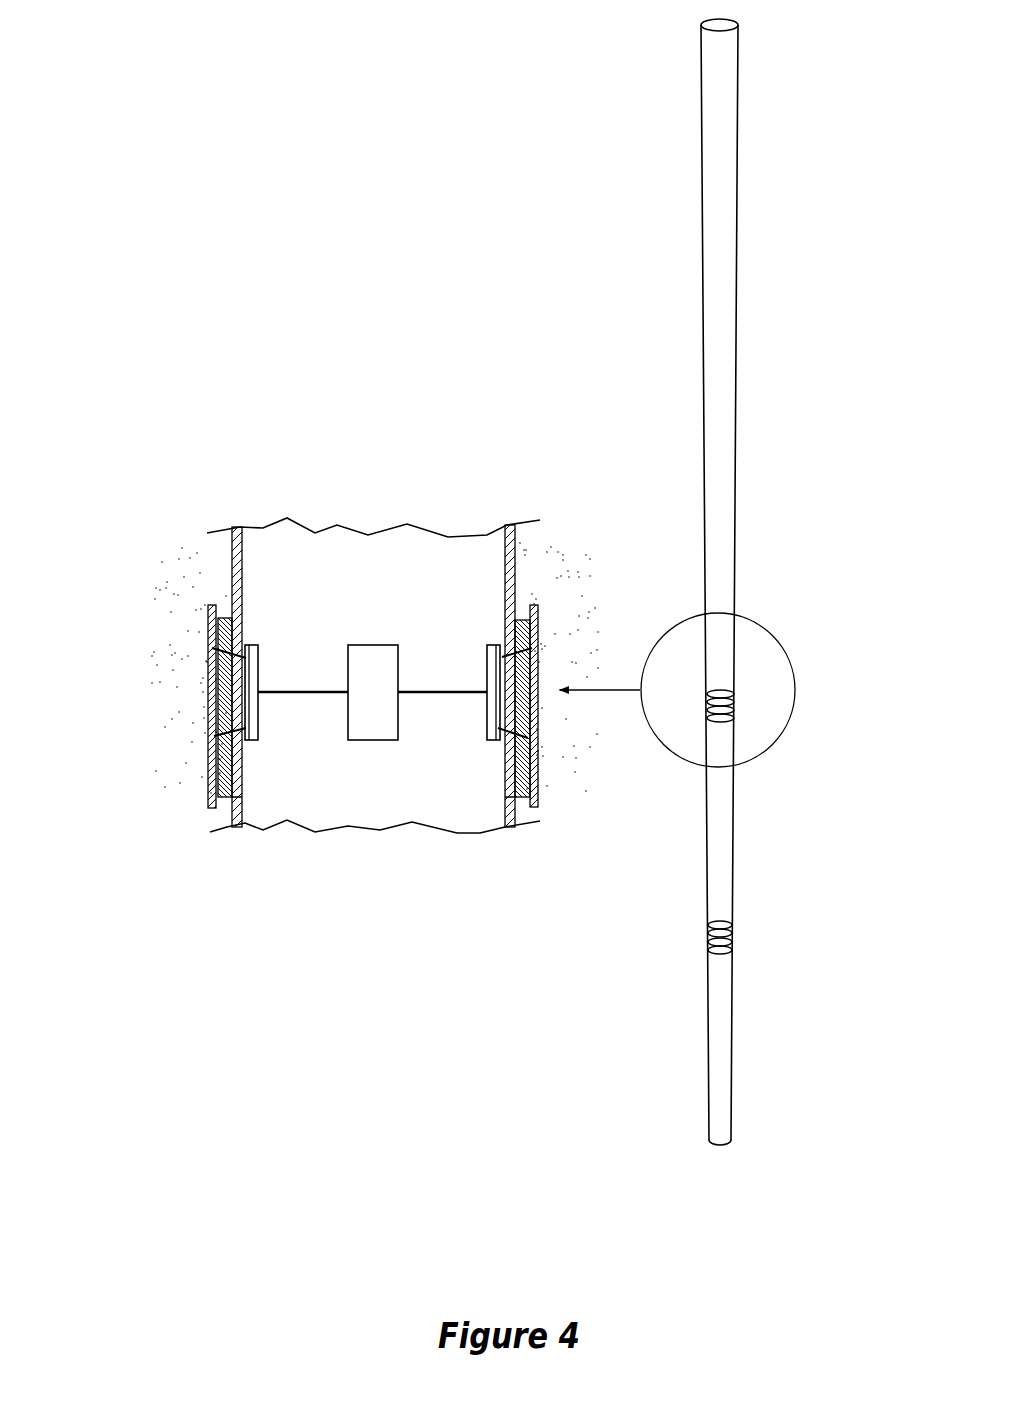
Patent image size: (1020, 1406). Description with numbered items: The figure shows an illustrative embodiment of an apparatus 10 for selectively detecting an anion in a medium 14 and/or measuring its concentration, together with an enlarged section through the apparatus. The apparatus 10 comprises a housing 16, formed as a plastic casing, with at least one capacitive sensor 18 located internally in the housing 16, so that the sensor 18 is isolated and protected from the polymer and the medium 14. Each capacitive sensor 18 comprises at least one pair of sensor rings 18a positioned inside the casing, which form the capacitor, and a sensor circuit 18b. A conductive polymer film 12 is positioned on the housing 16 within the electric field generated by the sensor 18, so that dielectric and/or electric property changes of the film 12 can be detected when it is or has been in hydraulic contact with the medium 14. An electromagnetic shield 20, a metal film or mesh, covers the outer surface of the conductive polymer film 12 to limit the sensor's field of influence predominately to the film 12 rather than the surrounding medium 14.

The apparatus 10 is at (696, 149).
The conductive polymer film 12 is at (222, 617).
The medium 14 is at (188, 647).
The housing 16 is at (238, 810).
The capacitive sensor 18 is at (372, 682).
The sensor rings 18a is at (258, 738).
The sensor circuit 18b is at (371, 720).
The electromagnetic shield 20 is at (212, 719).